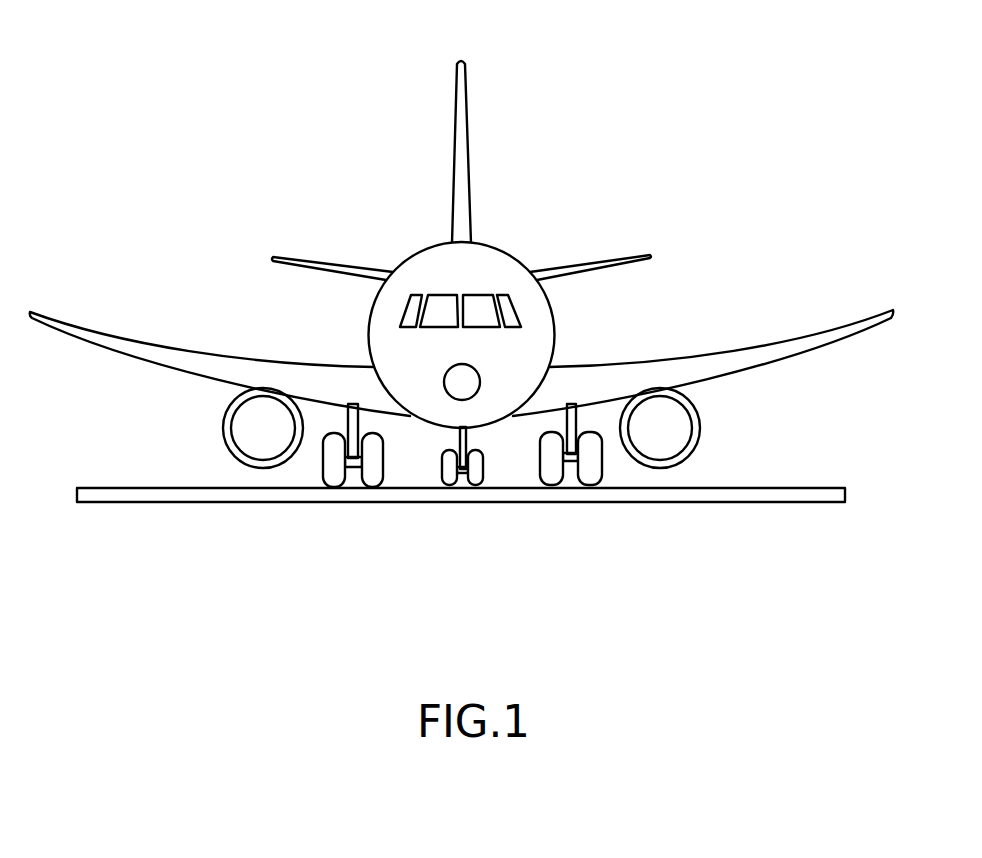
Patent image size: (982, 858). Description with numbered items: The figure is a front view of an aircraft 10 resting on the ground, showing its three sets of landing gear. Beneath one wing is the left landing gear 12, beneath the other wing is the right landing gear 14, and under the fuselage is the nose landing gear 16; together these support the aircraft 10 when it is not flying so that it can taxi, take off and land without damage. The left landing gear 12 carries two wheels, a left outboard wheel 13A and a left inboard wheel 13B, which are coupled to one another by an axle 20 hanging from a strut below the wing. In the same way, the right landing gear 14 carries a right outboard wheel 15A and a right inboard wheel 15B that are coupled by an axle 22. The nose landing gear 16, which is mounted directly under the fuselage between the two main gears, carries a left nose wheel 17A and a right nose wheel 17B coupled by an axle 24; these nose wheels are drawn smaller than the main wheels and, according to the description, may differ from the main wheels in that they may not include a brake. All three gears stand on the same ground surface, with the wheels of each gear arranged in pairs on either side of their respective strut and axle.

The aircraft 10 is at (288, 149).
The left landing gear 12 is at (623, 473).
The left outboard wheel 13A is at (606, 478).
The left inboard wheel 13B is at (558, 437).
The right landing gear 14 is at (303, 470).
The right outboard wheel 15A is at (322, 478).
The right inboard wheel 15B is at (387, 477).
The nose landing gear 16 is at (495, 444).
The left nose wheel 17A is at (445, 482).
The right nose wheel 17B is at (483, 475).
The axle 20 is at (572, 465).
The axle 22 is at (357, 472).
The axle 24 is at (463, 475).